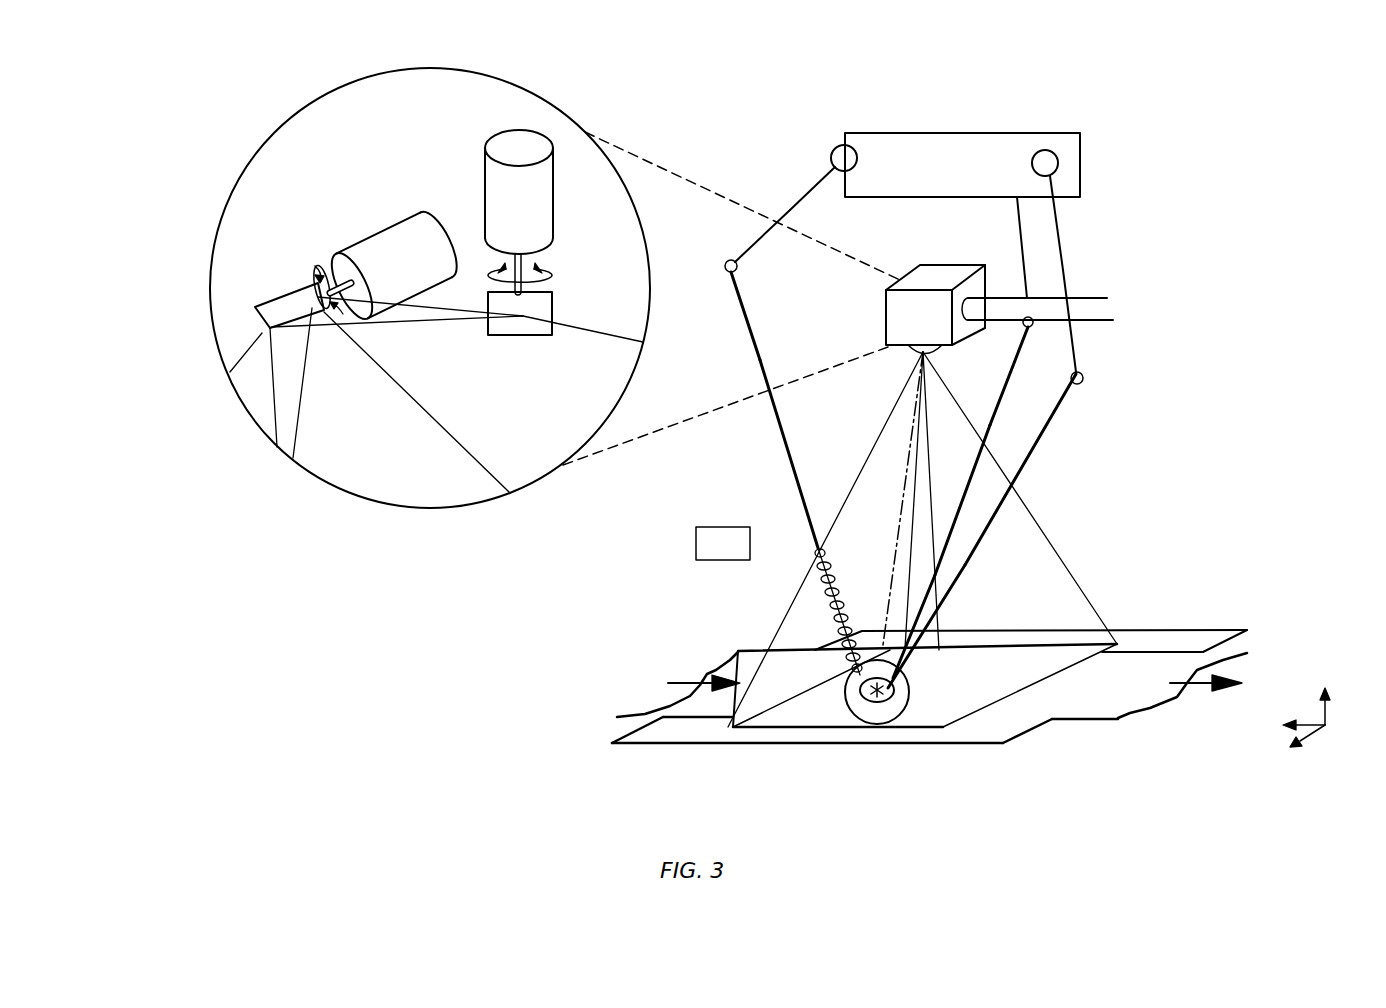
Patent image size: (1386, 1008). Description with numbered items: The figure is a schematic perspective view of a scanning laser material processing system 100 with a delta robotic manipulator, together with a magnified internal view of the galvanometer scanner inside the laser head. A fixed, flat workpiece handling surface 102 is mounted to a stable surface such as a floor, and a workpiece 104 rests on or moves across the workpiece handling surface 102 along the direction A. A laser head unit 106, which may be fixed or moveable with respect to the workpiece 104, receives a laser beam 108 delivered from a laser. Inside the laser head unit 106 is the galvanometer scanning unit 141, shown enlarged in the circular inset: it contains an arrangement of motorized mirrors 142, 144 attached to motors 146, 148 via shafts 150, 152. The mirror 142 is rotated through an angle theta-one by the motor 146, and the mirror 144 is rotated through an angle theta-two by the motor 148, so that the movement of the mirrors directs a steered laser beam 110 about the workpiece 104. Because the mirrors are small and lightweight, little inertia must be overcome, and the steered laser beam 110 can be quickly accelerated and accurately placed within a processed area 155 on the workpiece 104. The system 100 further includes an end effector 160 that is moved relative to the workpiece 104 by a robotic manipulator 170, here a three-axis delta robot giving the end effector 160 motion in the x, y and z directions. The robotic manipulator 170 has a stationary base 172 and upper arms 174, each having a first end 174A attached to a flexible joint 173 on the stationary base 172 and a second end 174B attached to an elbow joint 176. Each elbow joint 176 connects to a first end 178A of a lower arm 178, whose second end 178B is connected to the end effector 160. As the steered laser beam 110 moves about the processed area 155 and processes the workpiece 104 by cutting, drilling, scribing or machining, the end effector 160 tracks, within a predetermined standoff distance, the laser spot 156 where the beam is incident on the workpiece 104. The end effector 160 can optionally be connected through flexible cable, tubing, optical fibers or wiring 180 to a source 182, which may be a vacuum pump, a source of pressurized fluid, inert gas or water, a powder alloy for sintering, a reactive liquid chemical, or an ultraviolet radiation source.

The scanning laser material processing system 100 is at (733, 107).
The workpiece handling surface 102 is at (680, 730).
The workpiece 104 is at (738, 662).
The laser head unit 106 is at (888, 313).
The laser beam 108 is at (1090, 308).
The steered laser beam 110 is at (437, 422).
The galvanometer scanning unit 141 is at (263, 145).
The mirror 142 is at (528, 330).
The mirror 144 is at (291, 325).
The motor 146 is at (493, 176).
The motor 148 is at (375, 242).
The shaft 150 is at (522, 295).
The shaft 152 is at (312, 300).
The processed area 155 is at (933, 713).
The laser spot 156 is at (877, 702).
The end effector 160 is at (863, 702).
The robotic manipulator 170 is at (1010, 111).
The stationary base 172 is at (1073, 141).
The flexible joint 173 is at (844, 146).
The upper arm 174 is at (797, 196).
The first end of upper arm 174A is at (828, 170).
The second end of upper arm 174B is at (752, 250).
The elbow joint 176 is at (740, 268).
The lower arm 178 is at (793, 488).
The first end of lower arm 178A is at (762, 338).
The second end of lower arm 178B is at (918, 612).
The flexible cable, tubing, optical fibers or wiring 180 is at (815, 562).
The source 182 is at (815, 552).